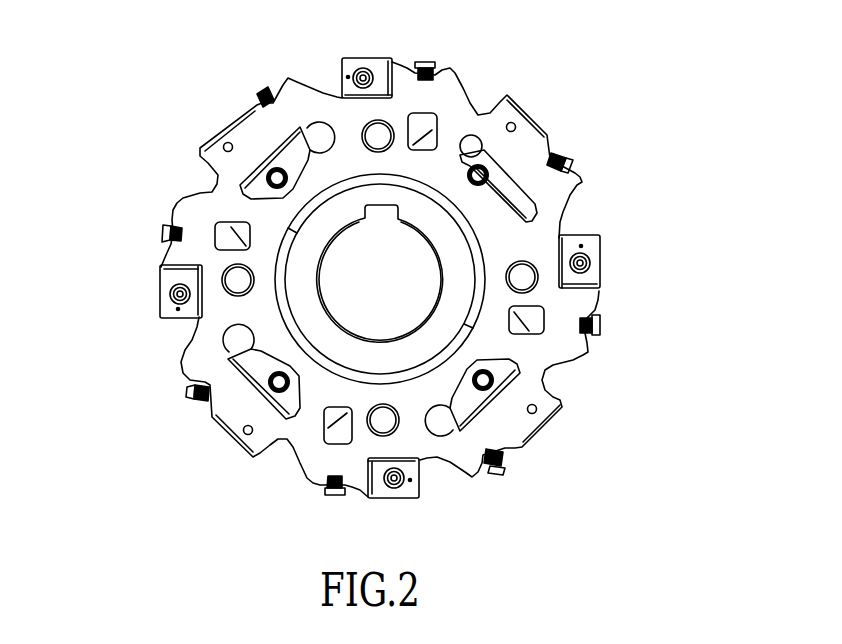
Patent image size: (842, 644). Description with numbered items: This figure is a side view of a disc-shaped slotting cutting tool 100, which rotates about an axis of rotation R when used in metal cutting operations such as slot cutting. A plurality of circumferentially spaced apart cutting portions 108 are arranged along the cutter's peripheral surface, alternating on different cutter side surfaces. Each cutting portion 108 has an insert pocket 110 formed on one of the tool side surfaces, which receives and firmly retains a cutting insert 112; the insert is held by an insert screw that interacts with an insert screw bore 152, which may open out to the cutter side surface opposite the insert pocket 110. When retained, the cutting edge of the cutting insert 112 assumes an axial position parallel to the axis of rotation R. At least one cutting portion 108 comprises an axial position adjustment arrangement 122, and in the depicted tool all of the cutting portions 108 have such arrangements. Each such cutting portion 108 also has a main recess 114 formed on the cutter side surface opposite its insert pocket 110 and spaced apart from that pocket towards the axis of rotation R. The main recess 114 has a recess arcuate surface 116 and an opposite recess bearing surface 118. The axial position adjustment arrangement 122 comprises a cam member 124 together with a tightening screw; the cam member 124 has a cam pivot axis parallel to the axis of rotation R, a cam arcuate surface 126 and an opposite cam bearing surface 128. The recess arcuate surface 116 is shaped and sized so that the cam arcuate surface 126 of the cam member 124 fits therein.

The cutting tool 100 is at (190, 103).
The cutting portion 108 is at (137, 256).
The insert pocket 110 is at (172, 334).
The cutting insert 112 is at (172, 281).
The main recess 114 is at (561, 236).
The recess arcuate surface 116 is at (513, 220).
The recess bearing surface 118 is at (486, 148).
The axial position adjustment arrangement 122 is at (600, 179).
The cam member 124 is at (508, 188).
The cam arcuate surface 126 is at (490, 187).
The cam bearing surface 128 is at (469, 136).
The insert screw bore 152 is at (515, 124).
The axis of rotation R is at (379, 278).